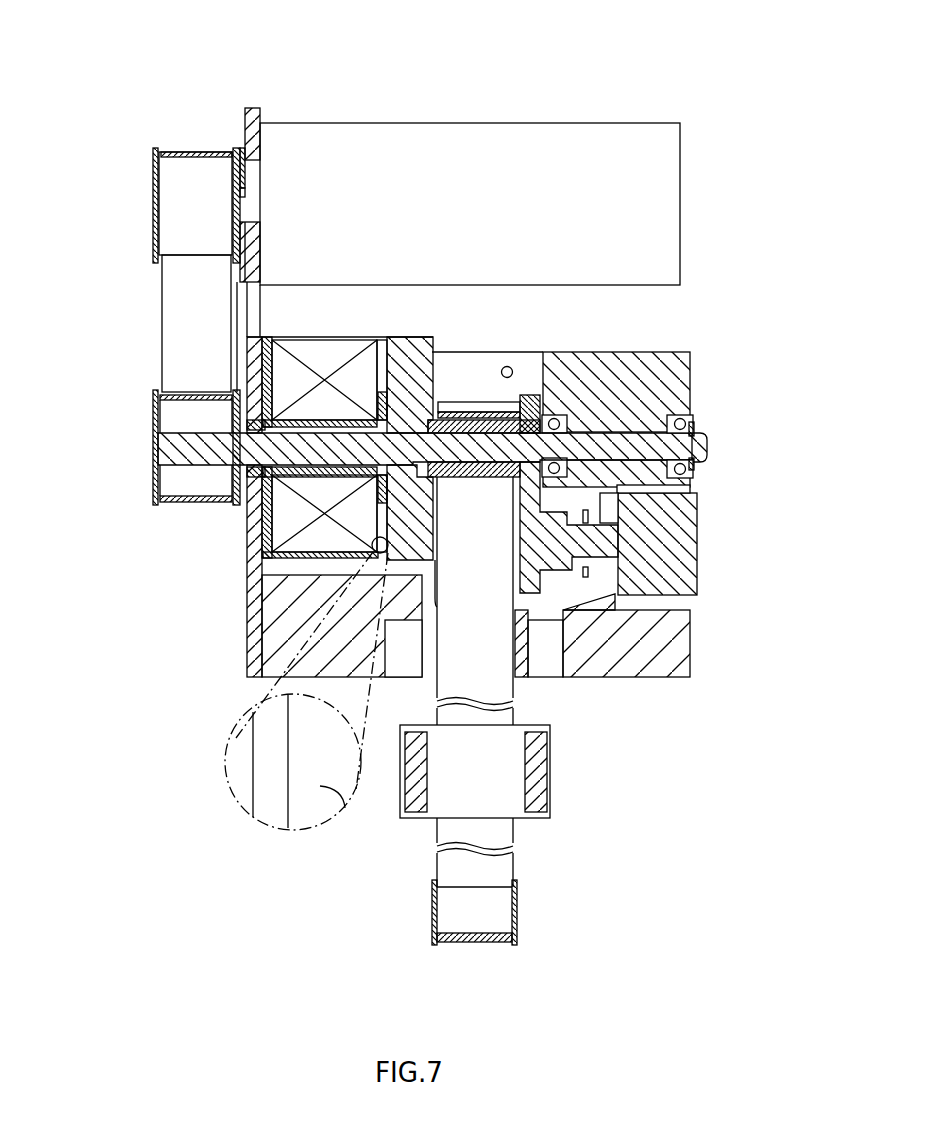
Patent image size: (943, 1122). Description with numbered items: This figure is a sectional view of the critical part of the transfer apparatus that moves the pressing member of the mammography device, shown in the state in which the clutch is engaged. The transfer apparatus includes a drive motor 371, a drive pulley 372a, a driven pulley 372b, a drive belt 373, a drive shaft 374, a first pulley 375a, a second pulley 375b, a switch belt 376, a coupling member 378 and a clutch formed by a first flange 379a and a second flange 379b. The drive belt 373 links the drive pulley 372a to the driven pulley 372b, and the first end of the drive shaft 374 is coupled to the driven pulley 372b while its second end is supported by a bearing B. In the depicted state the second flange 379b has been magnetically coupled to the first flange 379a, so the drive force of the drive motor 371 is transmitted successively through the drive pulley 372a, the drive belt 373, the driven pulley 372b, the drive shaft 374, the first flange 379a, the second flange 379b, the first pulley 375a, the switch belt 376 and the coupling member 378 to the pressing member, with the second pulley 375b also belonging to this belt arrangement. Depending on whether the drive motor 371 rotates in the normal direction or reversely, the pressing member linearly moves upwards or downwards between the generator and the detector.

The drive motor 371 is at (568, 123).
The drive pulley 372a is at (153, 177).
The driven pulley 372b is at (155, 420).
The drive belt 373 is at (162, 322).
The drive shaft 374 is at (313, 478).
The first pulley 375a is at (467, 400).
The second pulley 375b is at (517, 907).
The switch belt 376 is at (618, 505).
The coupling member 378 is at (547, 766).
The first flange 379a is at (297, 337).
The second flange 379b is at (410, 335).
The bearing B is at (690, 419).